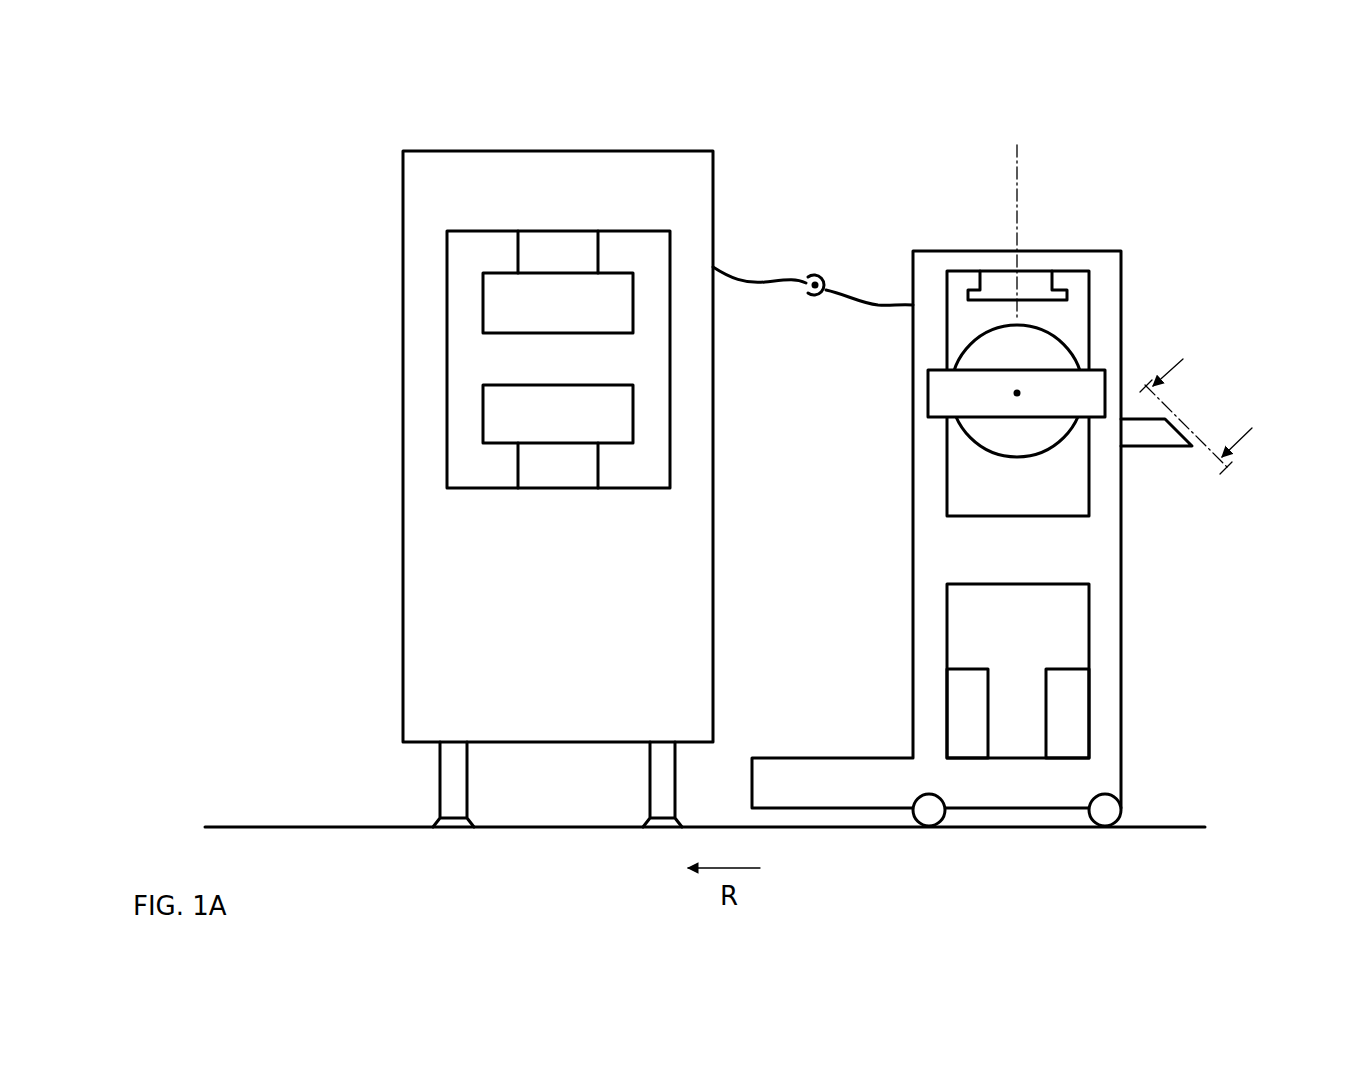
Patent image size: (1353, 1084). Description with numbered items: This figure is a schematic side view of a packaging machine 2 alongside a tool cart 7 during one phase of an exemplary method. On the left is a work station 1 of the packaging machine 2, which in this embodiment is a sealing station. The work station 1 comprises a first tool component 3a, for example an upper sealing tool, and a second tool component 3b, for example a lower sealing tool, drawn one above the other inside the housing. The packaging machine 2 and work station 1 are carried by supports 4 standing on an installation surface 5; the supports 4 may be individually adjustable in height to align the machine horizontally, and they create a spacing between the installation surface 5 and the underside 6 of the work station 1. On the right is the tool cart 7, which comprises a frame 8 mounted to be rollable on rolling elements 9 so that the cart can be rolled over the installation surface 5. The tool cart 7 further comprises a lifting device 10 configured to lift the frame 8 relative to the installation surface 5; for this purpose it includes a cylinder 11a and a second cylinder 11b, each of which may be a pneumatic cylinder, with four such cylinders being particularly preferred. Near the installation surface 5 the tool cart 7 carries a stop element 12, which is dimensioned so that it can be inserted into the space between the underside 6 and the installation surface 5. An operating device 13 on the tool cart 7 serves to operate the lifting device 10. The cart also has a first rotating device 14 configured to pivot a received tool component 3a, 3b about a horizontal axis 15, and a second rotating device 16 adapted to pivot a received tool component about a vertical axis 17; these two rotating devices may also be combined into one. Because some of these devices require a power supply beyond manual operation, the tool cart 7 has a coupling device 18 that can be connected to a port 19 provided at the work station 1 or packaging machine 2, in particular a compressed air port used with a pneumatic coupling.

The work station 1 is at (674, 161).
The packaging machine 2 is at (529, 454).
The first tool component 3a is at (497, 304).
The second tool component 3b is at (497, 418).
The supports 4 is at (447, 798).
The installation surface 5 is at (540, 829).
The underside 6 is at (495, 746).
The tool cart 7 is at (1012, 514).
The frame 8 is at (1110, 522).
The rolling elements 9 is at (940, 815).
The lifting device 10 is at (1013, 666).
The cylinder 11a is at (1077, 691).
The second cylinder 11b is at (953, 714).
The stop element 12 is at (818, 794).
The operating device 13 is at (1175, 428).
The first rotating device 14 is at (1035, 344).
The horizontal axis 15 is at (1012, 393).
The second rotating device 16 is at (1003, 278).
The vertical axis 17 is at (1016, 163).
The coupling device 18 is at (856, 284).
The port 19 is at (760, 280).